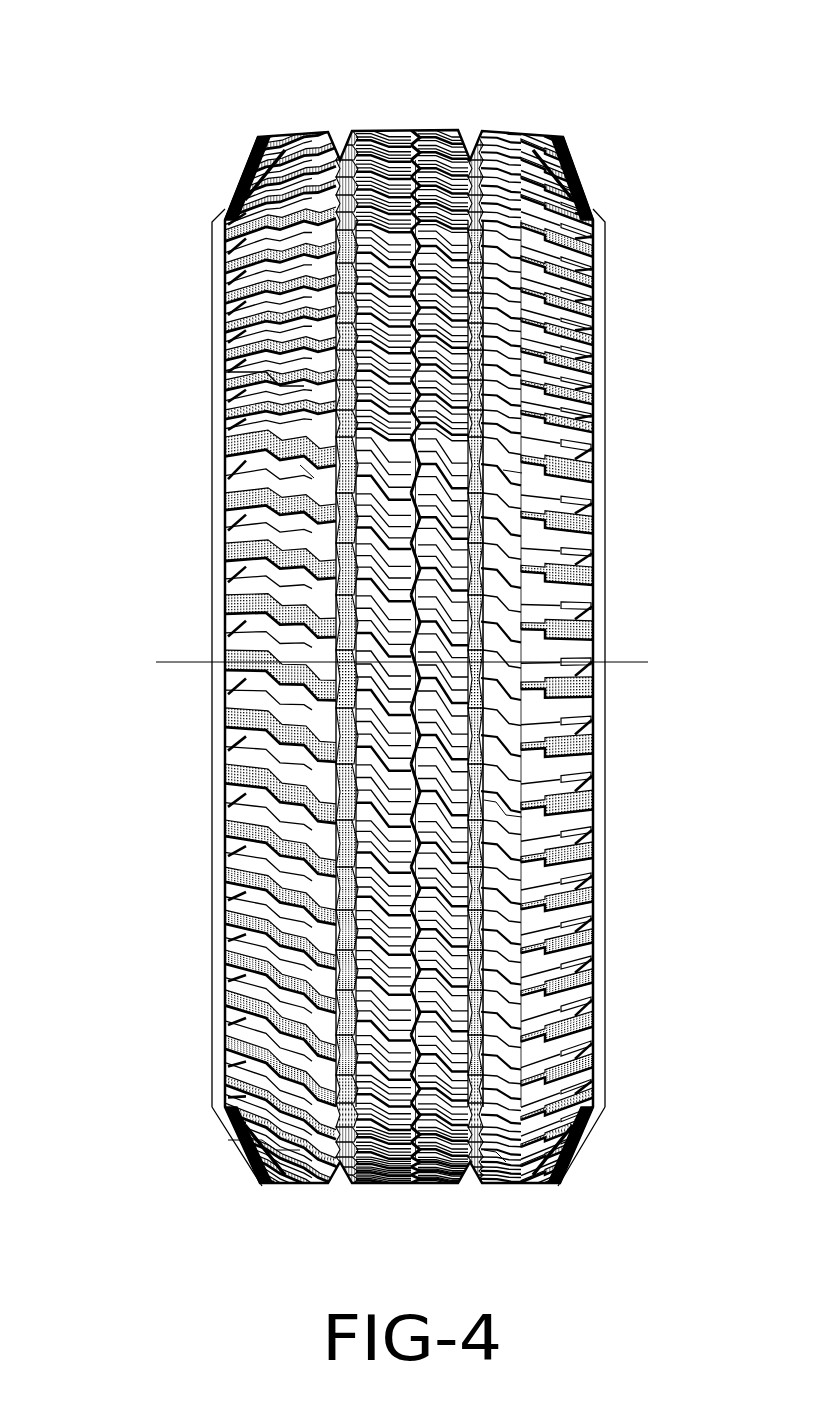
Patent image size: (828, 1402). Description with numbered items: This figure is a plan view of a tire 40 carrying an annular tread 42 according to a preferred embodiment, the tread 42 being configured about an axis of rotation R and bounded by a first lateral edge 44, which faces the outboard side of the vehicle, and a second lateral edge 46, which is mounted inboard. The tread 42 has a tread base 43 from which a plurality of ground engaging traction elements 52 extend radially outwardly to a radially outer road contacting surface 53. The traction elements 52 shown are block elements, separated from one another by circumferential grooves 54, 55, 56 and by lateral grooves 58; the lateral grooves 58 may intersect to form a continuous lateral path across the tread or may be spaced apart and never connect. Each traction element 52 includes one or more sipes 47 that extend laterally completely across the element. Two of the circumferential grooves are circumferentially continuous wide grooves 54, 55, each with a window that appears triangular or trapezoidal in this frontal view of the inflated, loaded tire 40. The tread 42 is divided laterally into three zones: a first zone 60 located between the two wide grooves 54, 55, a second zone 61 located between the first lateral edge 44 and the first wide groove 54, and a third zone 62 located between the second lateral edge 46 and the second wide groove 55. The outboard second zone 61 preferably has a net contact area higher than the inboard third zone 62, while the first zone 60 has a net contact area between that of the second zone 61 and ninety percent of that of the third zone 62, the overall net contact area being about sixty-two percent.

The tire 40 is at (204, 815).
The tread 42 is at (264, 918).
The tread base 43 is at (518, 910).
The first lateral edge 44 is at (555, 140).
The second lateral edge 46 is at (262, 136).
The sipes 47 is at (510, 390).
The traction elements 52 is at (368, 492).
The radially outer surface 53 is at (505, 806).
The first wide circumferential groove 54 is at (468, 145).
The second wide circumferential groove 55 is at (343, 145).
The circumferential groove 56 is at (410, 148).
The lateral grooves 58 is at (238, 372).
The first tread zone 60 is at (440, 1172).
The second tread zone 61 is at (508, 1150).
The third tread zone 62 is at (300, 1145).
The axis of rotation R is at (403, 662).